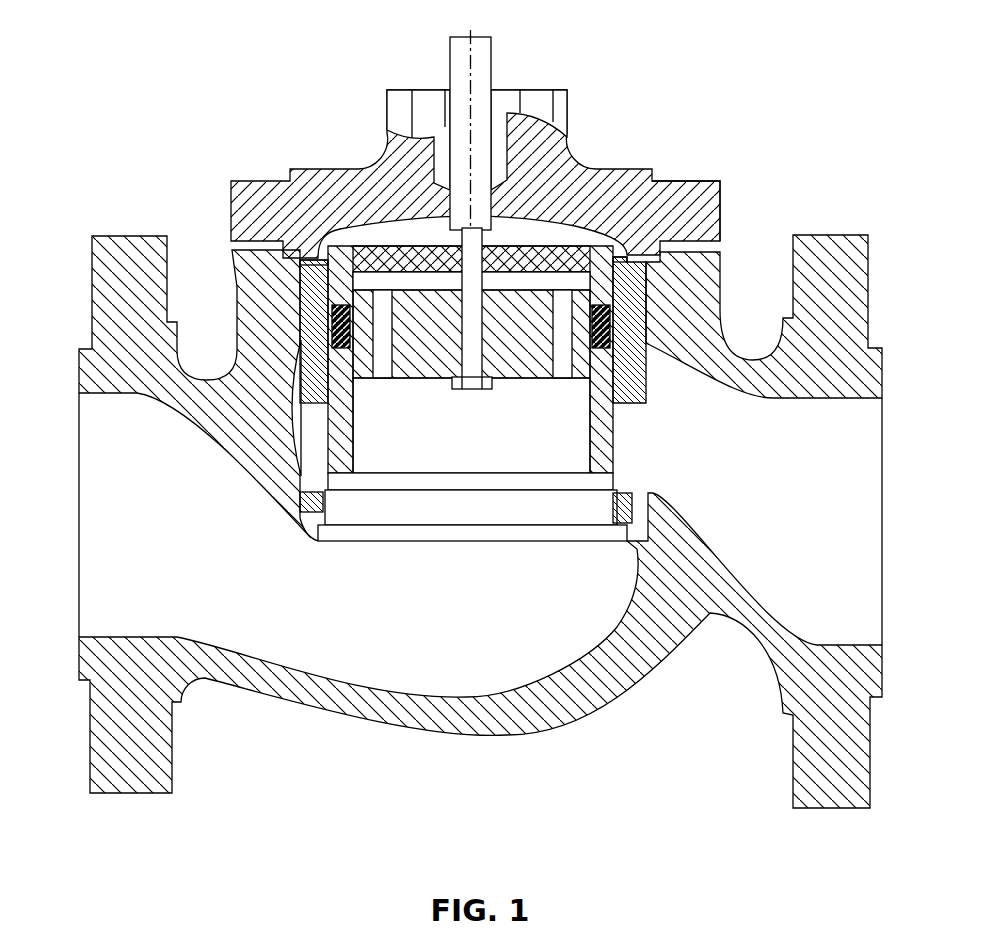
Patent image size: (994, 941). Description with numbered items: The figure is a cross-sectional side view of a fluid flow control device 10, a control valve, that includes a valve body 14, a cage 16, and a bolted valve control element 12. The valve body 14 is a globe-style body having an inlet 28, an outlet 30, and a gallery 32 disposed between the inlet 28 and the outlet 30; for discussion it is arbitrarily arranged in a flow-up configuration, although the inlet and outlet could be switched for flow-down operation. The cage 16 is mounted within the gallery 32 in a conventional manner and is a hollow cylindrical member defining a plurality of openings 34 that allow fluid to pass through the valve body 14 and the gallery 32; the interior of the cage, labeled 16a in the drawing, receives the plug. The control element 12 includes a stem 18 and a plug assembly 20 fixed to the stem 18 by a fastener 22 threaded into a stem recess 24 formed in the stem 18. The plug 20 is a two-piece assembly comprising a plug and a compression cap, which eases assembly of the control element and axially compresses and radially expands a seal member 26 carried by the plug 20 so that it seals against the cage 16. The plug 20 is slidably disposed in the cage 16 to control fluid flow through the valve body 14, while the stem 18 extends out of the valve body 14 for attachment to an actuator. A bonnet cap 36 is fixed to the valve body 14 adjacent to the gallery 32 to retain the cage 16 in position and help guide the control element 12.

The fluid flow control device 10 is at (636, 70).
The control element 12 is at (535, 232).
The valve body 14 is at (833, 235).
The cage 16 is at (299, 267).
The cage interior cavity 16a is at (341, 389).
The stem 18 is at (480, 122).
The plug assembly 20 is at (418, 253).
The fastener 22 is at (298, 260).
The stem recess 24 is at (470, 232).
The seal member 26 is at (299, 283).
The inlet 28 is at (108, 568).
The outlet 30 is at (853, 451).
The gallery 32 is at (372, 514).
The openings 34 is at (310, 484).
The bonnet cap 36 is at (682, 182).